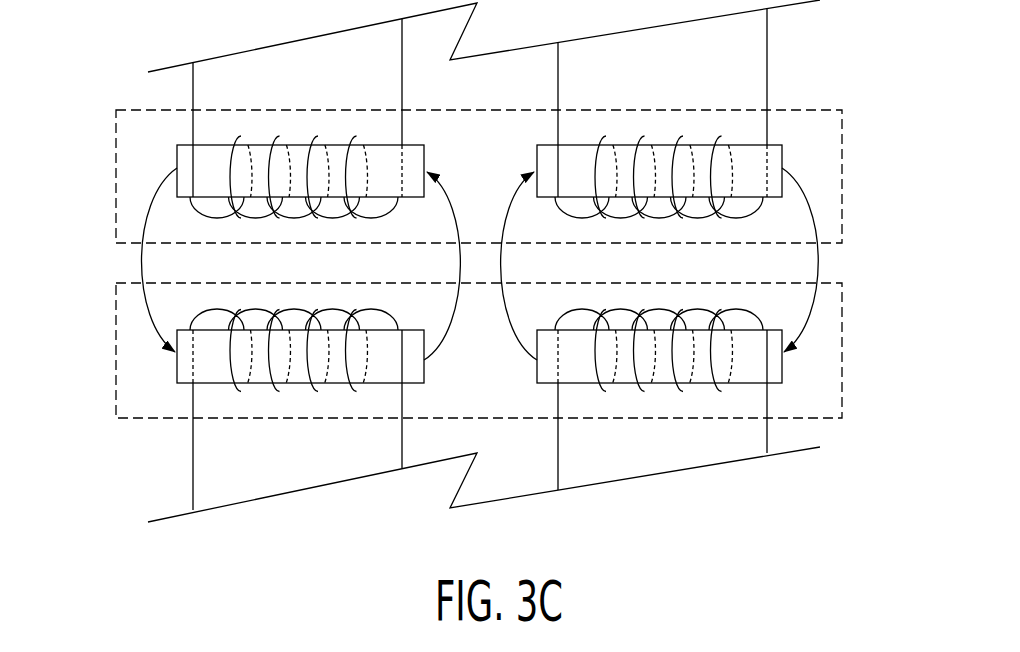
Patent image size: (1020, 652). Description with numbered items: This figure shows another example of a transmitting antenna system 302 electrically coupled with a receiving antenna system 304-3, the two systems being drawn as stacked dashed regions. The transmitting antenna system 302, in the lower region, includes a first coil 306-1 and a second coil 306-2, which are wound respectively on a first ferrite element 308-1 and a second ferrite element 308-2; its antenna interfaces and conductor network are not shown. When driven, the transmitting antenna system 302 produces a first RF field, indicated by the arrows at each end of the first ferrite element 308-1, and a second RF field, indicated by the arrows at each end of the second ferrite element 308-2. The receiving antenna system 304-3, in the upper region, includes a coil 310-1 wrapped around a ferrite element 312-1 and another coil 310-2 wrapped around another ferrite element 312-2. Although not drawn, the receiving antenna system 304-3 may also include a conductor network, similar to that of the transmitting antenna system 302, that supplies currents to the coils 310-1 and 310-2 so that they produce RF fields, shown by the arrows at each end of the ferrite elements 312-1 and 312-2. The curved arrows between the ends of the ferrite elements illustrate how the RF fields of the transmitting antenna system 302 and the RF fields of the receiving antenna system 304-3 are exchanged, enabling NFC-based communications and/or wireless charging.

The transmitting antenna system 302 is at (116, 331).
The receiving antenna system 304-3 is at (116, 132).
The first coil 306-1 is at (320, 392).
The second coil 306-2 is at (682, 392).
The first ferrite element 308-1 is at (177, 373).
The second ferrite element 308-2 is at (782, 373).
The coil 310-1 is at (242, 136).
The another coil 310-2 is at (718, 134).
The ferrite element 312-1 is at (177, 155).
The another ferrite element 312-2 is at (782, 145).